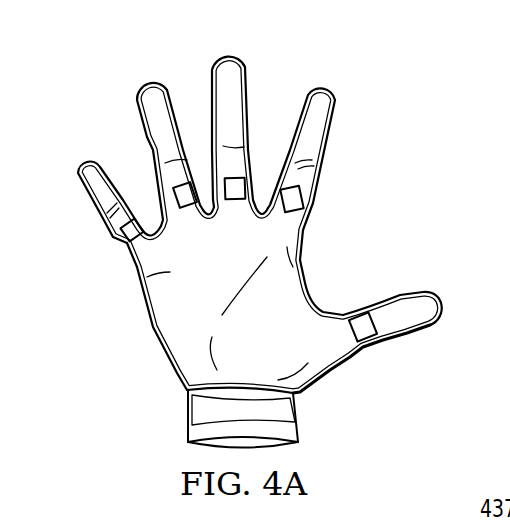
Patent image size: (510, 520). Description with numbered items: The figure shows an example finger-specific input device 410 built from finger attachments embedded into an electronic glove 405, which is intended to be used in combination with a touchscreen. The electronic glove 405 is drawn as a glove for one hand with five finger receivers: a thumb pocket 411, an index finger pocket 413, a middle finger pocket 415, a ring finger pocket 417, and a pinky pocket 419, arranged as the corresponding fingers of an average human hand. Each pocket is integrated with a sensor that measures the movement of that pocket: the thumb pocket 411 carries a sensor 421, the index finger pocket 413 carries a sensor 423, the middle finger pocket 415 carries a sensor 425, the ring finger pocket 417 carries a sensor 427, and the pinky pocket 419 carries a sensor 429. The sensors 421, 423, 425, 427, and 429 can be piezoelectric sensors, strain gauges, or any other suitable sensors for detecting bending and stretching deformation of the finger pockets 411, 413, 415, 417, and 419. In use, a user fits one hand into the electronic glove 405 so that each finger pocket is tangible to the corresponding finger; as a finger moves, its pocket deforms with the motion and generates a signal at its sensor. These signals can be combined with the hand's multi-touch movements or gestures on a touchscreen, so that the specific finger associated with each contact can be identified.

The finger-specific input device 410 is at (81, 71).
The electronic glove 405 is at (150, 335).
The thumb pocket 411 is at (408, 288).
The index finger pocket 413 is at (322, 88).
The middle finger pocket 415 is at (227, 54).
The ring finger pocket 417 is at (145, 83).
The pinky pocket 419 is at (84, 162).
The sensor 421 is at (350, 332).
The sensor 423 is at (308, 215).
The sensor 425 is at (233, 201).
The sensor 427 is at (189, 210).
The sensor 429 is at (121, 237).